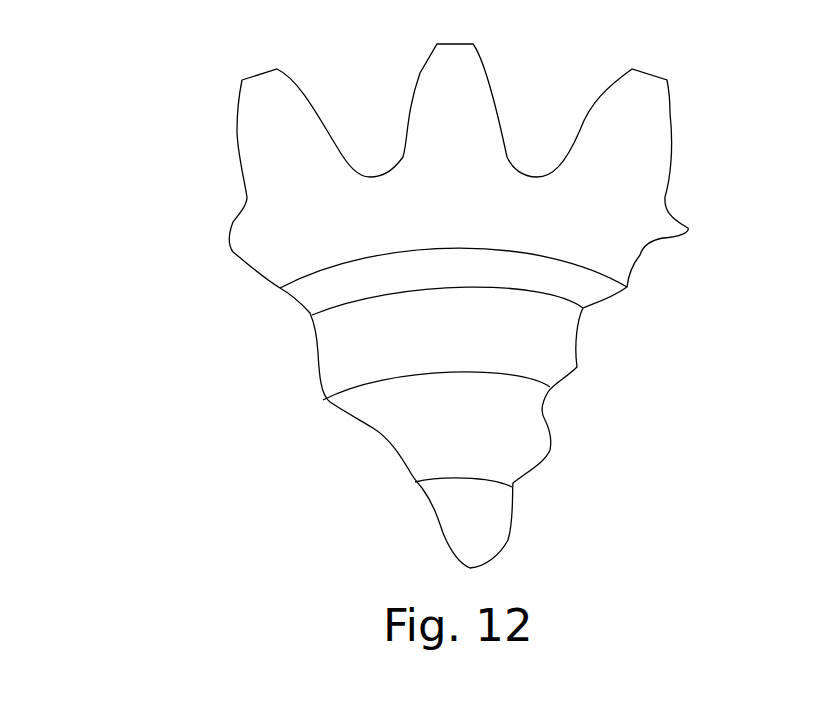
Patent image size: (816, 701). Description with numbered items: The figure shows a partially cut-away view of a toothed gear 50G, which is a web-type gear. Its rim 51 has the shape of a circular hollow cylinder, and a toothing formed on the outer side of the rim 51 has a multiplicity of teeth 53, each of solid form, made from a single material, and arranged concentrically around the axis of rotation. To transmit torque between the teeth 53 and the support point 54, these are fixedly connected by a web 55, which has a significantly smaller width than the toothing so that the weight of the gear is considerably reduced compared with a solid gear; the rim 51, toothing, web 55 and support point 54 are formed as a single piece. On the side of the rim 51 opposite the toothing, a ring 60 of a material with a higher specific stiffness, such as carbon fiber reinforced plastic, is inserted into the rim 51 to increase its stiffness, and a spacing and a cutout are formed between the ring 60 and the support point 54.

The toothed gear 50G is at (170, 153).
The teeth 53 is at (647, 93).
The rim 51 is at (630, 245).
The ring 60 is at (600, 290).
The web 55 is at (557, 347).
The support point 54 is at (483, 480).